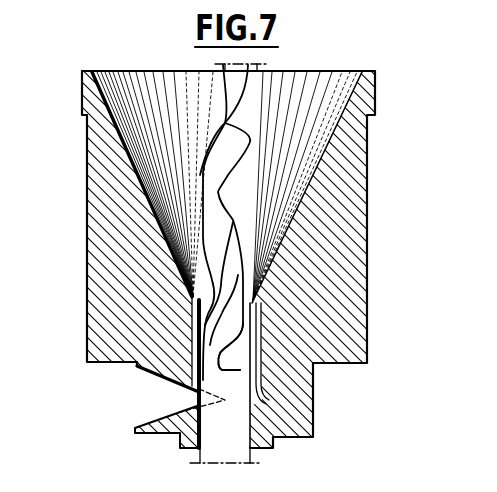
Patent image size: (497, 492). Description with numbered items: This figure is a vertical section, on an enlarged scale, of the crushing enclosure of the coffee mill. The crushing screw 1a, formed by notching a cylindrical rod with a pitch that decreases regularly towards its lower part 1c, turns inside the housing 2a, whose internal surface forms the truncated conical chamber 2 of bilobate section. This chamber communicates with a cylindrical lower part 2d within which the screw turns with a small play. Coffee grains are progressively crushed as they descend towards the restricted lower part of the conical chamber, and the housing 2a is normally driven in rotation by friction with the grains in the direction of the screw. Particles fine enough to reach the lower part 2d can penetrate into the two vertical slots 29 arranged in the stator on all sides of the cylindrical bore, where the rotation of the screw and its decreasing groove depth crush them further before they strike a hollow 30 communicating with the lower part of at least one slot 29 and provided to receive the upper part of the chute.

The truncated conical chamber 2 is at (297, 141).
The housing 2a is at (347, 193).
The crushing screw 1a is at (220, 233).
The lower part of the chamber 2d is at (258, 305).
The vertical slots 29 is at (192, 337).
The hollow 30 is at (163, 384).
The lower part of the notched part 1c is at (233, 362).